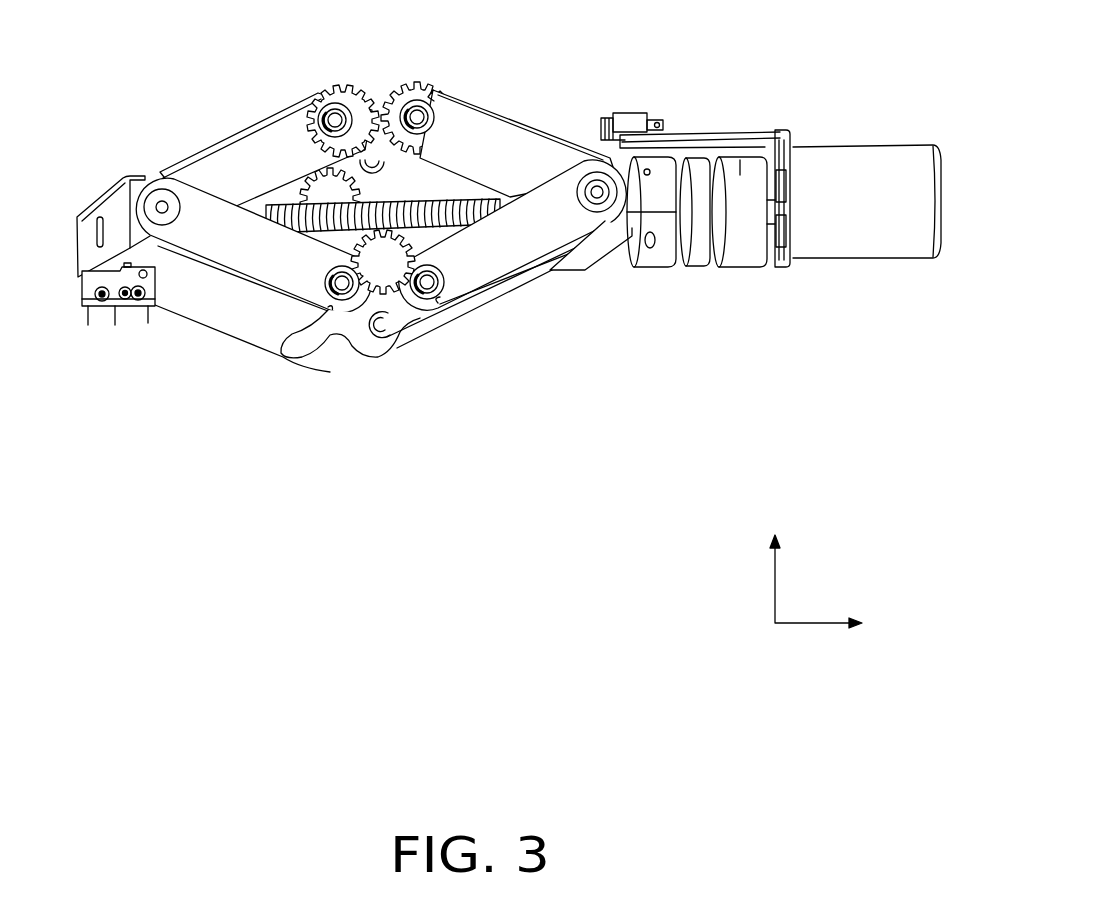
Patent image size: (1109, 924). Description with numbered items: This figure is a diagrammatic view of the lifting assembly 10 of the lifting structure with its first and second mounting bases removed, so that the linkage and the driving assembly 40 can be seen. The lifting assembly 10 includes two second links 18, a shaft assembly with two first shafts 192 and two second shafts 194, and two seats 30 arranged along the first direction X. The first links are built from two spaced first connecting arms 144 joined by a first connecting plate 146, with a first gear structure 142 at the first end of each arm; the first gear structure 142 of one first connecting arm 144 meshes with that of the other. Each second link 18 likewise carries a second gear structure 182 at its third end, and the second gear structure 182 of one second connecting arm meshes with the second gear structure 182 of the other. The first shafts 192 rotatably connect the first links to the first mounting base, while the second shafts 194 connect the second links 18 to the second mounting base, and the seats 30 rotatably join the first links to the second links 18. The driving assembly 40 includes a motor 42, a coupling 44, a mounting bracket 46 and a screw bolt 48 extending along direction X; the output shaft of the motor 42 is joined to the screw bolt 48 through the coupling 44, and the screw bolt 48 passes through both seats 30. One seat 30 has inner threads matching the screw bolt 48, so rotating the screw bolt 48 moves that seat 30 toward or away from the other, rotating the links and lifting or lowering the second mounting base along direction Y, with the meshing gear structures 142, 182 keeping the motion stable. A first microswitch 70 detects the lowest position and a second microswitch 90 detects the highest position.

The lifting assembly 10 is at (337, 398).
The second link 18 is at (222, 137).
The seat 30 is at (93, 210).
The driving assembly 40 is at (773, 286).
The motor 42 is at (866, 250).
The coupling 44 is at (738, 254).
The mounting bracket 46 is at (713, 135).
The screw bolt 48 is at (293, 213).
The first microswitch 70 is at (117, 312).
The second microswitch 90 is at (625, 113).
The first gear structure 142 is at (400, 270).
The first connecting arm 144 is at (480, 254).
The first connecting plate 146 is at (470, 308).
The second gear structure 182 is at (364, 98).
The first shaft 192 is at (390, 334).
The second shaft 194 is at (432, 95).